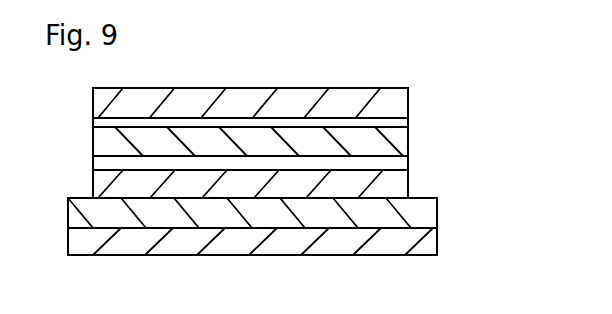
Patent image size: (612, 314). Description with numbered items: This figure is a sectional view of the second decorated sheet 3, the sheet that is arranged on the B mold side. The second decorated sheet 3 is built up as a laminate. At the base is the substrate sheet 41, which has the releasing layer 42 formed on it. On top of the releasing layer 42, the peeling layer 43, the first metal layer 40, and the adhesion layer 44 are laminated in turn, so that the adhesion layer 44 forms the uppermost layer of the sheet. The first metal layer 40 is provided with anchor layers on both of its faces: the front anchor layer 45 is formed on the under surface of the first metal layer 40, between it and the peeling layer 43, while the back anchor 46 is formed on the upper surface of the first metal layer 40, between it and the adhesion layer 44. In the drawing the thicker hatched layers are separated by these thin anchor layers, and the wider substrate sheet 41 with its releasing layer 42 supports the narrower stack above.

The second decorated sheet 3 is at (347, 74).
The adhesion layer 44 is at (408, 102).
The back anchor 46 is at (408, 122).
The first metal layer 40 is at (408, 140).
The front anchor layer 45 is at (408, 164).
The peeling layer 43 is at (408, 182).
The releasing layer 42 is at (427, 212).
The substrate sheet 41 is at (435, 242).